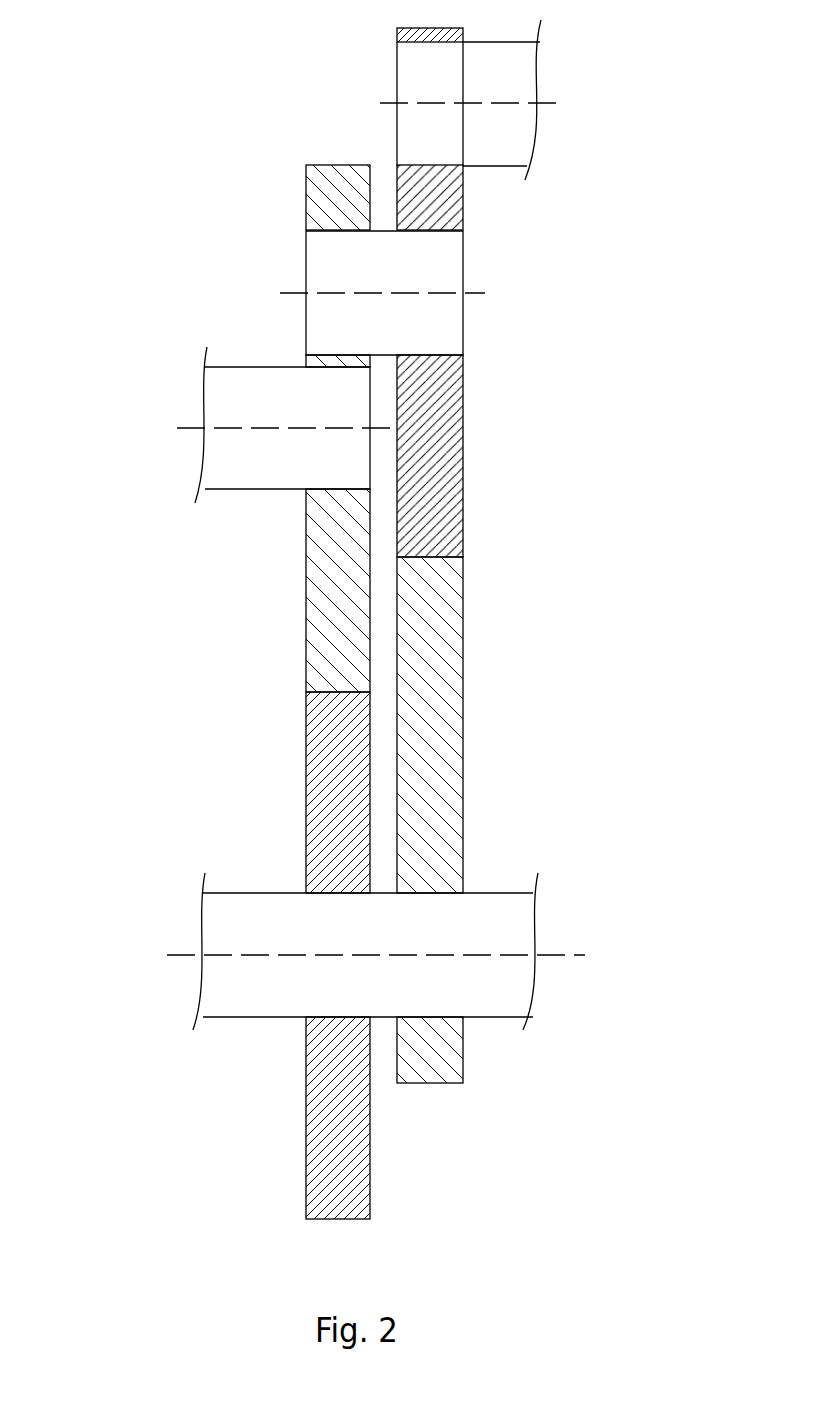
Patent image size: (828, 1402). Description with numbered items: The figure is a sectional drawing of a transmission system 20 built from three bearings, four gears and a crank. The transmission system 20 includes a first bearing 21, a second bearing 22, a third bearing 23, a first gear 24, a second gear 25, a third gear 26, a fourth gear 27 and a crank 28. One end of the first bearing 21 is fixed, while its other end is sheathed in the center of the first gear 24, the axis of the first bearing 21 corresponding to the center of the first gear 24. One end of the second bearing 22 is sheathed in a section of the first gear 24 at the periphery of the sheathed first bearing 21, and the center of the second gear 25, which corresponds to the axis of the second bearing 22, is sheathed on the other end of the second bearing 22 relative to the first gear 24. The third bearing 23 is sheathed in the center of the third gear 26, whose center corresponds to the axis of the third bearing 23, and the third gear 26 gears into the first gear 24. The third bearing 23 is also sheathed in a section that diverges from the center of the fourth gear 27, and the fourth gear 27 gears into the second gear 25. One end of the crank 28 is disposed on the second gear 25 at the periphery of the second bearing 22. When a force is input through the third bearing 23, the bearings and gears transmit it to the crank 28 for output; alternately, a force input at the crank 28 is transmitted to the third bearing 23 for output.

The transmission system 20 is at (240, 85).
The first bearing 21 is at (220, 400).
The second bearing 22 is at (443, 278).
The third bearing 23 is at (513, 928).
The first gear 24 is at (318, 622).
The second gear 25 is at (452, 460).
The third gear 26 is at (318, 782).
The fourth gear 27 is at (452, 755).
The crank 28 is at (505, 75).